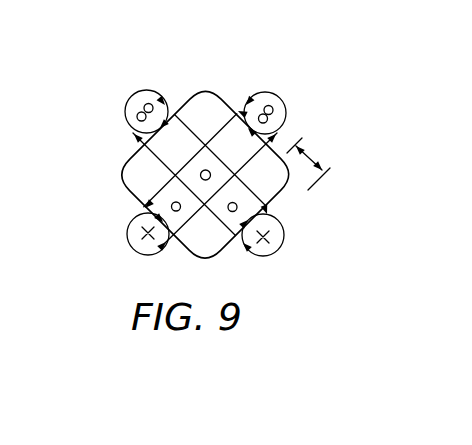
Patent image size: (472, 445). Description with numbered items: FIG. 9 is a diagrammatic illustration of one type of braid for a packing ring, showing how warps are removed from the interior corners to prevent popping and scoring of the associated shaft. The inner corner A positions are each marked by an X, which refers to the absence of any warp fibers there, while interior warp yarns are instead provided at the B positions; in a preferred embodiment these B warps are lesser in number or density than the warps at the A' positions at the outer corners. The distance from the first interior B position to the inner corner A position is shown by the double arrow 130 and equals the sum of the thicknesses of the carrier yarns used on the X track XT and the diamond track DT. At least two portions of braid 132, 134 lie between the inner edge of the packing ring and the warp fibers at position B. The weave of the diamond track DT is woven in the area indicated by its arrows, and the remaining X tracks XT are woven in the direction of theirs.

The double arrow 130 is at (313, 158).
The portion of braid 132 is at (171, 207).
The portion of braid 134 is at (131, 259).
The X track XT is at (127, 95).
The diamond track DT is at (208, 90).
The A position A is at (171, 252).
The A' position A' is at (200, 119).
The B position B is at (130, 167).